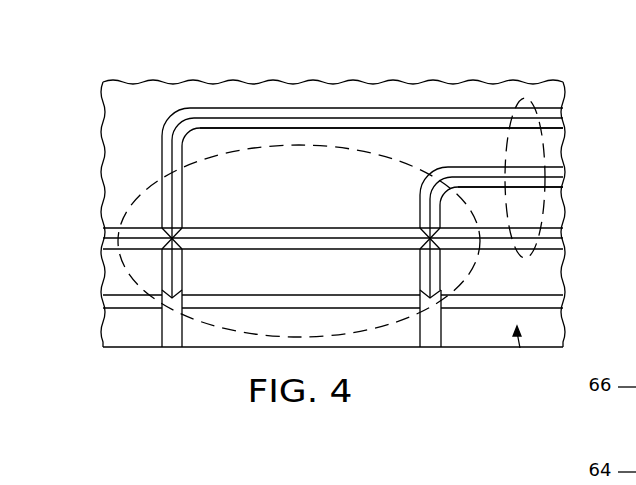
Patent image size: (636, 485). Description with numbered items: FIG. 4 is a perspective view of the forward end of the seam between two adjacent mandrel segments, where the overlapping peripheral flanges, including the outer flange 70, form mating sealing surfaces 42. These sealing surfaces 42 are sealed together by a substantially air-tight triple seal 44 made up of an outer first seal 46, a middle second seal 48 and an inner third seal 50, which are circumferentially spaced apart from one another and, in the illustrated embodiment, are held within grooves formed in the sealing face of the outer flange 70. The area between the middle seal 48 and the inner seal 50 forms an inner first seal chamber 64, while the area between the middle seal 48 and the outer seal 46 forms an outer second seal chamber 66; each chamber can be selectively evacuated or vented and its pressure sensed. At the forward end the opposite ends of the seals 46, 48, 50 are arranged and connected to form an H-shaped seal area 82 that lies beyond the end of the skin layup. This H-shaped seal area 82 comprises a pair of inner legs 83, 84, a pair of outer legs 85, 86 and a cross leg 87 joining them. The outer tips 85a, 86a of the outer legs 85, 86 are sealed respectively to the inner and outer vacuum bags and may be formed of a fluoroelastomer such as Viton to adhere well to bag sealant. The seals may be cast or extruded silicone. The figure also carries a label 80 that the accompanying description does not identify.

The outer flange 70 is at (255, 80).
The sealing surface 42 is at (406, 85).
The outer first seal 46 is at (553, 128).
The outer second seal chamber 66 is at (553, 155).
The middle second seal 48 is at (553, 189).
The inner first seal chamber 64 is at (553, 212).
The inner third seal 50 is at (553, 247).
The cross leg 87 is at (298, 228).
The tip of outer leg 86a is at (174, 300).
The tip of outer leg 85a is at (430, 300).
The inner leg 84 is at (183, 208).
The outer leg 86 is at (183, 262).
The inner leg 83 is at (418, 210).
The outer leg 85 is at (420, 262).
The H-shaped seal area 82 is at (114, 210).
The triple seal 44 is at (505, 158).
The base substrate 80 is at (529, 360).